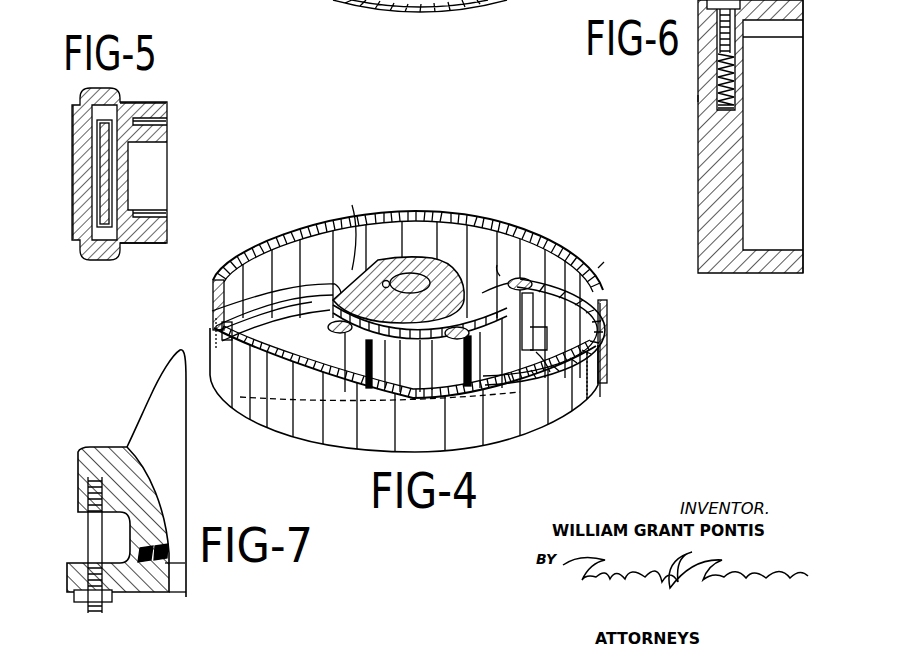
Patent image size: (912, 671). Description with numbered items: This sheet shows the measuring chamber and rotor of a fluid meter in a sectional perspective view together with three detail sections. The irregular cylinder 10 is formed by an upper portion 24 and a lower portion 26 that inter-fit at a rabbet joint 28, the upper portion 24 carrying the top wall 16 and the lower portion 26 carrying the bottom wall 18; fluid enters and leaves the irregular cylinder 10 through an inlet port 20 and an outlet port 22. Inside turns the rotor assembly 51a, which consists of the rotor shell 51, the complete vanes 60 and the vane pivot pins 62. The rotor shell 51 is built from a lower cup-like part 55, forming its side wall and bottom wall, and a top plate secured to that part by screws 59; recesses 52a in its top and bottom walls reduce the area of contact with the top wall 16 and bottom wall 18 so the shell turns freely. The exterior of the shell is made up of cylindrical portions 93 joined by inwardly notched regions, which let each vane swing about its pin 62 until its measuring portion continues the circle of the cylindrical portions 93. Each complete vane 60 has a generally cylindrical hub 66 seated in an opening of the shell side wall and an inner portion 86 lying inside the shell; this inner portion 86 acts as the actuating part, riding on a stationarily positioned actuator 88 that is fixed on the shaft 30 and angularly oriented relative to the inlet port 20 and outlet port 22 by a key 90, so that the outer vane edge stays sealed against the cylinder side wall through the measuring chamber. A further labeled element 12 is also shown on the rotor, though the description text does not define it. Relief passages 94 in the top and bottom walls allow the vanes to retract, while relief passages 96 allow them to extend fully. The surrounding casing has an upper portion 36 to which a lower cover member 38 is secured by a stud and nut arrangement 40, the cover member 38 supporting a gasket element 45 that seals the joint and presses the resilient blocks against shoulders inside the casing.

In FIG. 4, the irregular cylinder 10 is at (432, 225).
In FIG. 5, the irregular cylinder 10 is at (160, 118).
In FIG. 4, the blade 12 is at (531, 254).
In FIG. 5, the top wall 16 is at (135, 121).
In FIG. 5, the bottom wall 18 is at (160, 214).
In FIG. 4, the inlet port 20 is at (214, 312).
In FIG. 4, the outlet port 22 is at (604, 328).
In FIG. 5, the upper portion 24 is at (124, 110).
In FIG. 4, the lower portion 26 is at (305, 230).
In FIG. 5, the lower portion 26 is at (158, 240).
In FIG. 5, the rabbet joint 28 is at (76, 172).
In FIG. 4, the shaft 30 is at (400, 280).
In FIG. 7, the upper portion of casing 36 is at (138, 426).
In FIG. 7, the lower cover member 38 is at (153, 588).
In FIG. 7, the stud and nut arrangement 40 is at (96, 522).
In FIG. 7, the gasket element 45 is at (182, 563).
In FIG. 6, the rotor shell 51 is at (679, 102).
In FIG. 4, the rotor assembly 51a is at (608, 268).
In FIG. 5, the recesses 52a is at (138, 218).
In FIG. 4, the lower cup-like part 55 is at (462, 372).
In FIG. 6, the lower cup-like part 55 is at (700, 182).
In FIG. 6, the screws 59 is at (720, 48).
In FIG. 4, the complete vanes 60 is at (598, 300).
In FIG. 4, the vane pivot pins 62 is at (335, 318).
In FIG. 4, the hub 66 is at (540, 358).
In FIG. 4, the inner portion 86 is at (342, 292).
In FIG. 4, the actuator 88 is at (433, 265).
In FIG. 4, the key 90 is at (359, 228).
In FIG. 4, the cylindrical portions 93 is at (426, 385).
In FIG. 4, the measuring vane retraction relief passages 94 is at (498, 275).
In FIG. 4, the measuring vane extension relief passages 96 is at (225, 332).